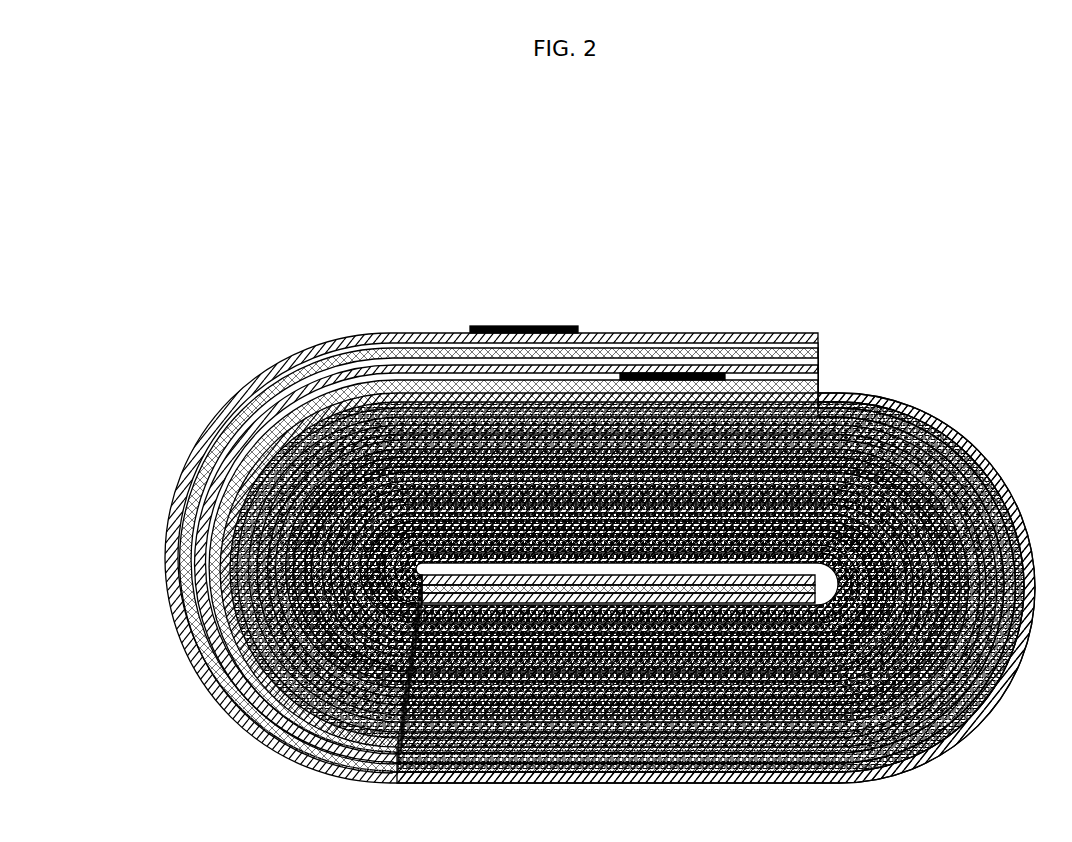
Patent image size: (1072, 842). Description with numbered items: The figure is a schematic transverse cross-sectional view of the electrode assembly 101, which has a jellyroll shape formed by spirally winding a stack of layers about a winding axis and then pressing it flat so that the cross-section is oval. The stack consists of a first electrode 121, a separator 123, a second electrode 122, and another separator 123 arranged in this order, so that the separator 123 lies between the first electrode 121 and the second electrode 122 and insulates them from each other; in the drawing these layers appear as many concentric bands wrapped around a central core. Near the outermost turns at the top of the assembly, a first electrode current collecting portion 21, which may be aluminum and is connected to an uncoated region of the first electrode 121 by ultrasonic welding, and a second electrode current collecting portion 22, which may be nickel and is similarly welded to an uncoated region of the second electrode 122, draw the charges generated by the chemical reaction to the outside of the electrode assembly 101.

The electrode assembly 101 is at (546, 208).
The first electrode 121 is at (396, 333).
The second electrode 122 is at (598, 358).
The separator 123 is at (739, 350).
The first electrode current collecting portion 21 is at (490, 326).
The second electrode current collecting portion 22 is at (641, 373).